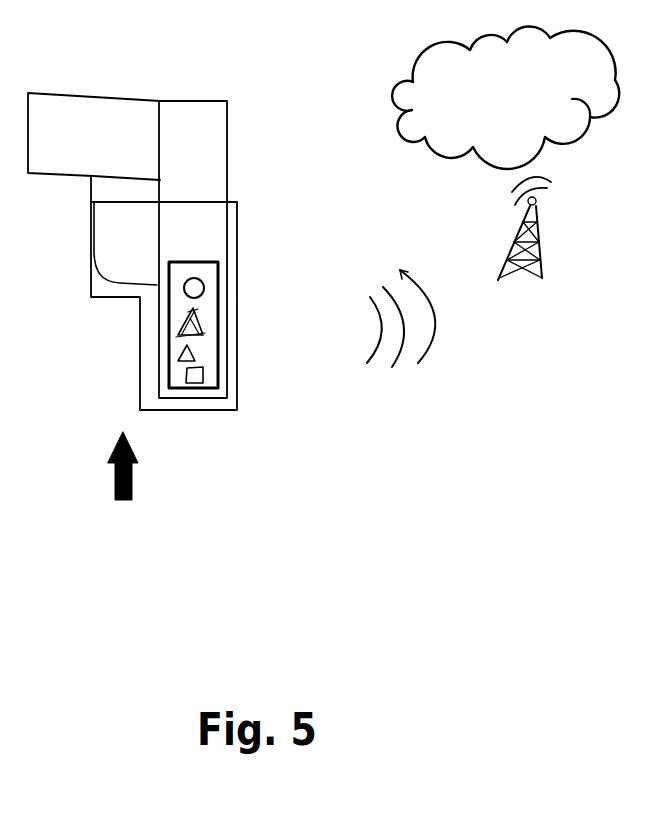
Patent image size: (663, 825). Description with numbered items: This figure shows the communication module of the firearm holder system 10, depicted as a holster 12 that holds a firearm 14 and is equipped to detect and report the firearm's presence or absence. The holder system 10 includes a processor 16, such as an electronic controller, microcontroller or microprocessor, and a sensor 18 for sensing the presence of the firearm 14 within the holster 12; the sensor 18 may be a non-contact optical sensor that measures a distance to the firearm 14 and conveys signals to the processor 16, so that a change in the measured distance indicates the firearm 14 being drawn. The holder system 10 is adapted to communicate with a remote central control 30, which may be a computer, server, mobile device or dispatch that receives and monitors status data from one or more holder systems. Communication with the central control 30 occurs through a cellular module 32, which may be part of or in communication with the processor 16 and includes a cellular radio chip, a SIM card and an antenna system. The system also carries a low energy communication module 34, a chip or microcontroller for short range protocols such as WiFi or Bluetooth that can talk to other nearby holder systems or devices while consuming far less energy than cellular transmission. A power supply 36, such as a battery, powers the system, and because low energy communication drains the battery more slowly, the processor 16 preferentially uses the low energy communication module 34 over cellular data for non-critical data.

The firearm holder system 10 is at (123, 478).
The holster 12 is at (234, 270).
The firearm 14 is at (193, 100).
The processor 16 is at (207, 355).
The sensor 18 is at (205, 289).
The central control 30 is at (507, 115).
The cellular module 32 is at (178, 322).
The low energy communication module 34 is at (177, 358).
The power supply 36 is at (207, 375).